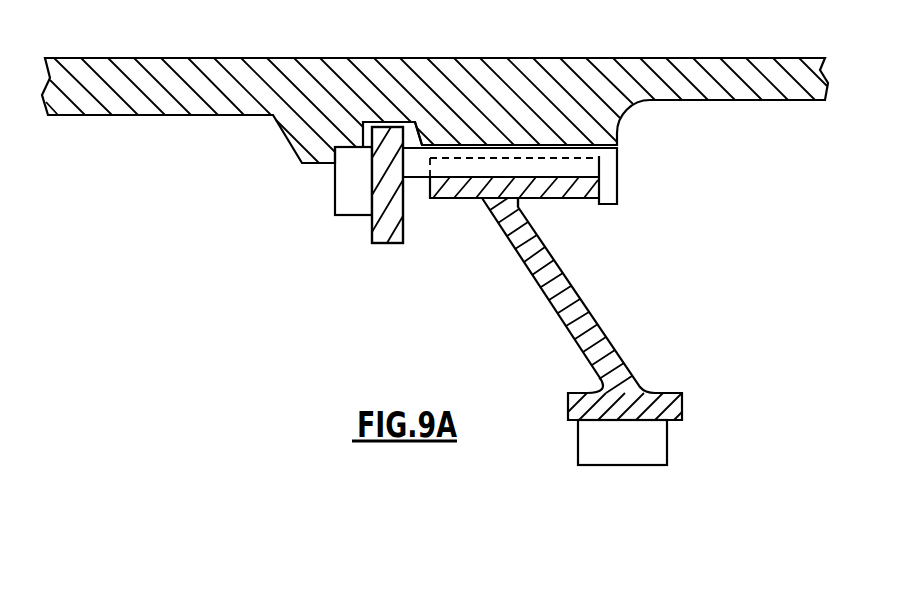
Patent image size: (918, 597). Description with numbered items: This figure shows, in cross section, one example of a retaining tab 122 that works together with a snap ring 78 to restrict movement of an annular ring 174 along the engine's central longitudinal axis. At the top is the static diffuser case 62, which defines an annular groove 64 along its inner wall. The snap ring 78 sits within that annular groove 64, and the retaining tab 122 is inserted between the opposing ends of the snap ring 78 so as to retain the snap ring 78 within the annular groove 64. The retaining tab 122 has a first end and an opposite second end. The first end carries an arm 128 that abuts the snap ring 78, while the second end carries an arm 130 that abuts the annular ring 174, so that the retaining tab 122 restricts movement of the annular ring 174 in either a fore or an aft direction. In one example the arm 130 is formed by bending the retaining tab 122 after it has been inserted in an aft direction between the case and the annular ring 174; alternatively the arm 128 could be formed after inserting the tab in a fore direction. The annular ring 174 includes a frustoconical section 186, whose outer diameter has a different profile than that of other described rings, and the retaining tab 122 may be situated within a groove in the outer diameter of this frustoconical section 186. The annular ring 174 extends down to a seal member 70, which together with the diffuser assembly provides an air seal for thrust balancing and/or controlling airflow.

The diffuser case 62 is at (184, 72).
The annular groove 64 is at (398, 122).
The arm 128 is at (350, 187).
The snap ring 78 is at (378, 237).
The retaining tab 122 is at (415, 158).
The arm 130 is at (612, 187).
The frustoconical section 186 is at (531, 222).
The annular ring 174 is at (583, 302).
The seal member 70 is at (668, 445).